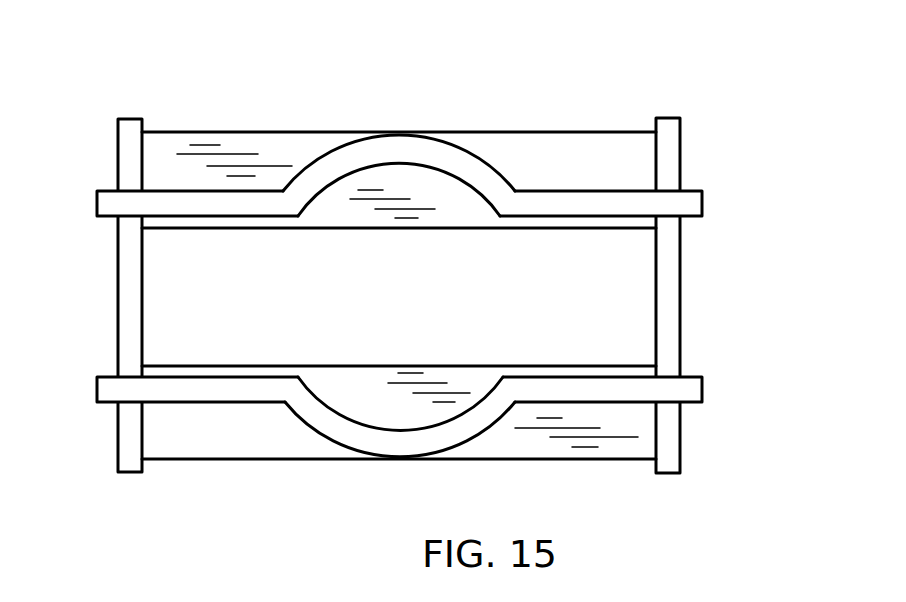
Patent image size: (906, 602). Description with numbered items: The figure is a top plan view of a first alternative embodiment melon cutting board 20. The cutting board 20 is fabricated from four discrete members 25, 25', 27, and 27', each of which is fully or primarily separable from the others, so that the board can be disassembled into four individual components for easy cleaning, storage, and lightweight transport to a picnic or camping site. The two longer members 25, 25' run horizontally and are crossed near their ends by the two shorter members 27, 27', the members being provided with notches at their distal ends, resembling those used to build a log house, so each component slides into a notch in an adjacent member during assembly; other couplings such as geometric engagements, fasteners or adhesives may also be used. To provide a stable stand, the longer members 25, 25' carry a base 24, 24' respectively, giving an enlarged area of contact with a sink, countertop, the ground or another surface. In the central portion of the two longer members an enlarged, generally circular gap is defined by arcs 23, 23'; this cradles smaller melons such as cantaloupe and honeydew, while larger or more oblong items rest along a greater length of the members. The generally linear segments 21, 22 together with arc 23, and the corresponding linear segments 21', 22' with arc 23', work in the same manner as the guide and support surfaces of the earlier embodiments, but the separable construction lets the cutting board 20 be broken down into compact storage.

The melon cutting board 20 is at (713, 177).
The generally linear segment 21 is at (601, 138).
The generally linear segment 21' is at (602, 452).
The generally linear segment 22 is at (197, 123).
The generally linear segment 22' is at (197, 446).
The arc 23 is at (399, 139).
The arc 23' is at (400, 449).
The base 24 is at (585, 126).
The base 24' is at (569, 457).
The discrete member 25 is at (399, 111).
The discrete member 25' is at (395, 476).
The discrete member 27 is at (714, 295).
The discrete member 27' is at (84, 295).